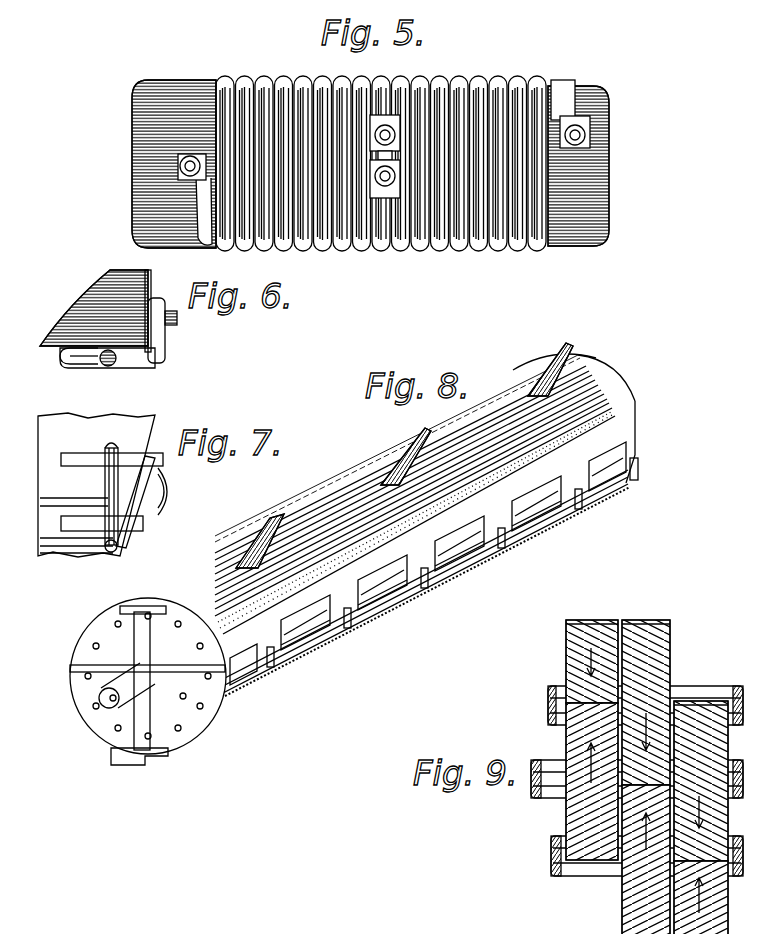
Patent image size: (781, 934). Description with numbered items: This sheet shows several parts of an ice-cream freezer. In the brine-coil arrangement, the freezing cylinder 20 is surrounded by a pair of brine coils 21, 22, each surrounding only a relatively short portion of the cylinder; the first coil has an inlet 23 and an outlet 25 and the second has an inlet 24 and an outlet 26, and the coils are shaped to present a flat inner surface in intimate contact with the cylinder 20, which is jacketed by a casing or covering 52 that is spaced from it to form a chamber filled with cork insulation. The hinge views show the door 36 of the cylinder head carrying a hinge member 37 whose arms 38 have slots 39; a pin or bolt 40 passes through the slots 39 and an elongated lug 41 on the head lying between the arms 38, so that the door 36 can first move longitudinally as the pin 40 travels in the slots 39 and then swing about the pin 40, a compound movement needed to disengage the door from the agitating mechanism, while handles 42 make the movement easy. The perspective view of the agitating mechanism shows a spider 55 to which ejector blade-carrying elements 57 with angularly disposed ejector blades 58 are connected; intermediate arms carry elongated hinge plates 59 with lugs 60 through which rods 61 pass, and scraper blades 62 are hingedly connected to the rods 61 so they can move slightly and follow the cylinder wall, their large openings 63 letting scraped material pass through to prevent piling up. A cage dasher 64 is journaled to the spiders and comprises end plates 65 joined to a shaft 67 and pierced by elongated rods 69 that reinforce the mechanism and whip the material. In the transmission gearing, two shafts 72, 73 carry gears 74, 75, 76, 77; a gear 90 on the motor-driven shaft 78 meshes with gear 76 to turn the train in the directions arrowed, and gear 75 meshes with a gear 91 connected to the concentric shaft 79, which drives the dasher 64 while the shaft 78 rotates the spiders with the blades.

In FIG. 5, the freezing cylinder 20 is at (580, 163).
In FIG. 5, the brine coil 21 is at (247, 70).
In FIG. 5, the brine coil 22 is at (490, 70).
In FIG. 5, the inlet 23 is at (379, 126).
In FIG. 5, the inlet 24 is at (568, 126).
In FIG. 5, the outlet 25 is at (181, 159).
In FIG. 5, the outlet 26 is at (377, 170).
In FIG. 6, the door 36 is at (144, 272).
In FIG. 7, the door 36 is at (118, 540).
In FIG. 6, the hinge member 37 is at (150, 356).
In FIG. 6, the arms 38 is at (126, 358).
In FIG. 7, the arms 38 is at (130, 392).
In FIG. 6, the slots 39 is at (70, 357).
In FIG. 6, the pin or bolt 40 is at (99, 360).
In FIG. 7, the pin or bolt 40 is at (100, 437).
In FIG. 7, the elongated lug 41 is at (112, 487).
In FIG. 6, the handles 42 is at (167, 318).
In FIG. 7, the handles 42 is at (158, 500).
In FIG. 6, the casing or covering 52 is at (62, 320).
In FIG. 8, the spider 55 is at (182, 685).
In FIG. 8, the ejector blade-carrying element 57 is at (355, 474).
In FIG. 8, the ejector blades 58 is at (262, 521).
In FIG. 8, the elongated hinge plates 59 is at (313, 634).
In FIG. 8, the lugs 60 is at (417, 572).
In FIG. 8, the rods 61 is at (383, 582).
In FIG. 8, the scraper blades 62 is at (520, 463).
In FIG. 8, the openings 63 is at (466, 524).
In FIG. 8, the cage dasher 64 is at (600, 362).
In FIG. 8, the end plates 65 is at (170, 717).
In FIG. 8, the shaft 67 is at (315, 563).
In FIG. 8, the elongated rods 69 is at (474, 453).
In FIG. 9, the shaft 72 is at (724, 840).
In FIG. 9, the shaft 73 is at (711, 678).
In FIG. 9, the gear 74 is at (614, 910).
In FIG. 9, the gear 75 is at (721, 912).
In FIG. 9, the gear 76 is at (597, 611).
In FIG. 9, the gear 77 is at (653, 611).
In FIG. 9, the shaft 78 is at (552, 749).
In FIG. 9, the shaft 79 is at (735, 767).
In FIG. 9, the gear 90 is at (560, 810).
In FIG. 9, the gear 91 is at (721, 732).